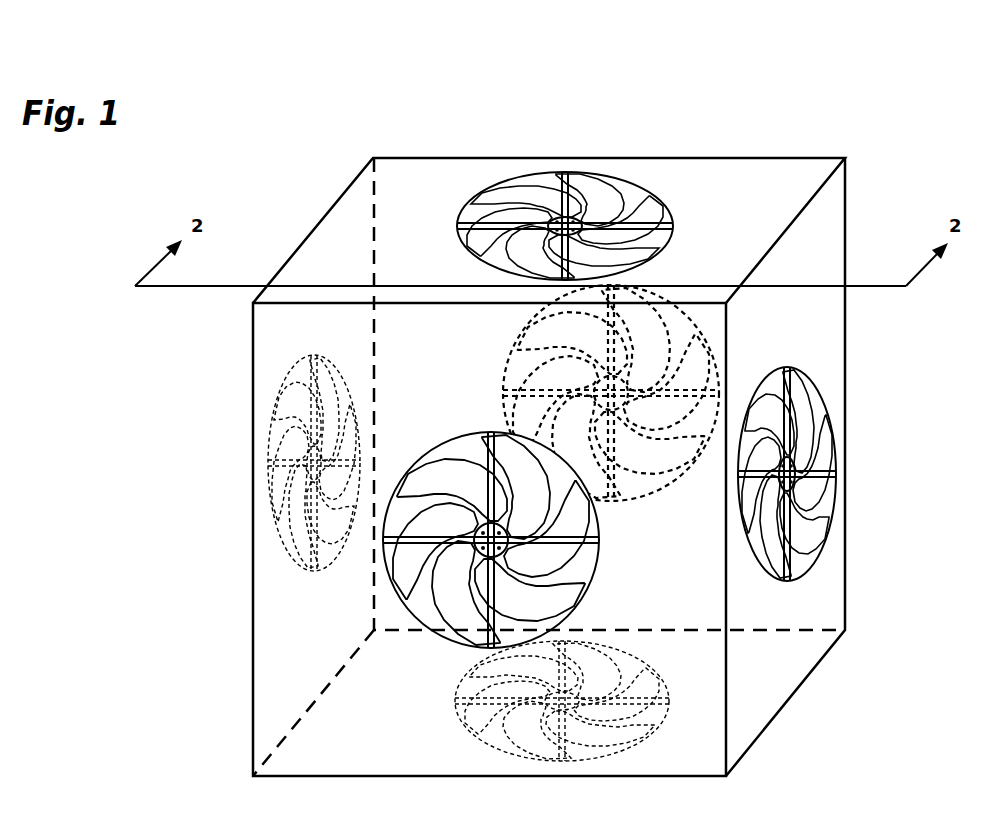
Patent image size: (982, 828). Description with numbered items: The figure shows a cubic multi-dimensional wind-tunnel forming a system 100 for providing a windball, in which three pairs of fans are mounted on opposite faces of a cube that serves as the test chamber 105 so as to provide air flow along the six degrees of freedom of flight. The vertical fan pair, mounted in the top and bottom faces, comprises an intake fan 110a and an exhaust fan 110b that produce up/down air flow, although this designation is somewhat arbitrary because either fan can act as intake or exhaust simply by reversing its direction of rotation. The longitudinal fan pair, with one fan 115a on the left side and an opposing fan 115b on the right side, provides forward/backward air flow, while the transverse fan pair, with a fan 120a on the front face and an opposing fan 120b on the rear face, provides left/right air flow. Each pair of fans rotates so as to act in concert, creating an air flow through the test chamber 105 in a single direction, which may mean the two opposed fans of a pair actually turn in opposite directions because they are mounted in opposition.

The system 100 is at (292, 162).
The test chamber 105 is at (760, 178).
The intake fan 110a is at (613, 173).
The exhaust fan 110b is at (568, 762).
The longitudinal fan 115a is at (284, 400).
The longitudinal fan 115b is at (823, 400).
The transverse fan 120a is at (468, 650).
The transverse fan 120b is at (497, 362).